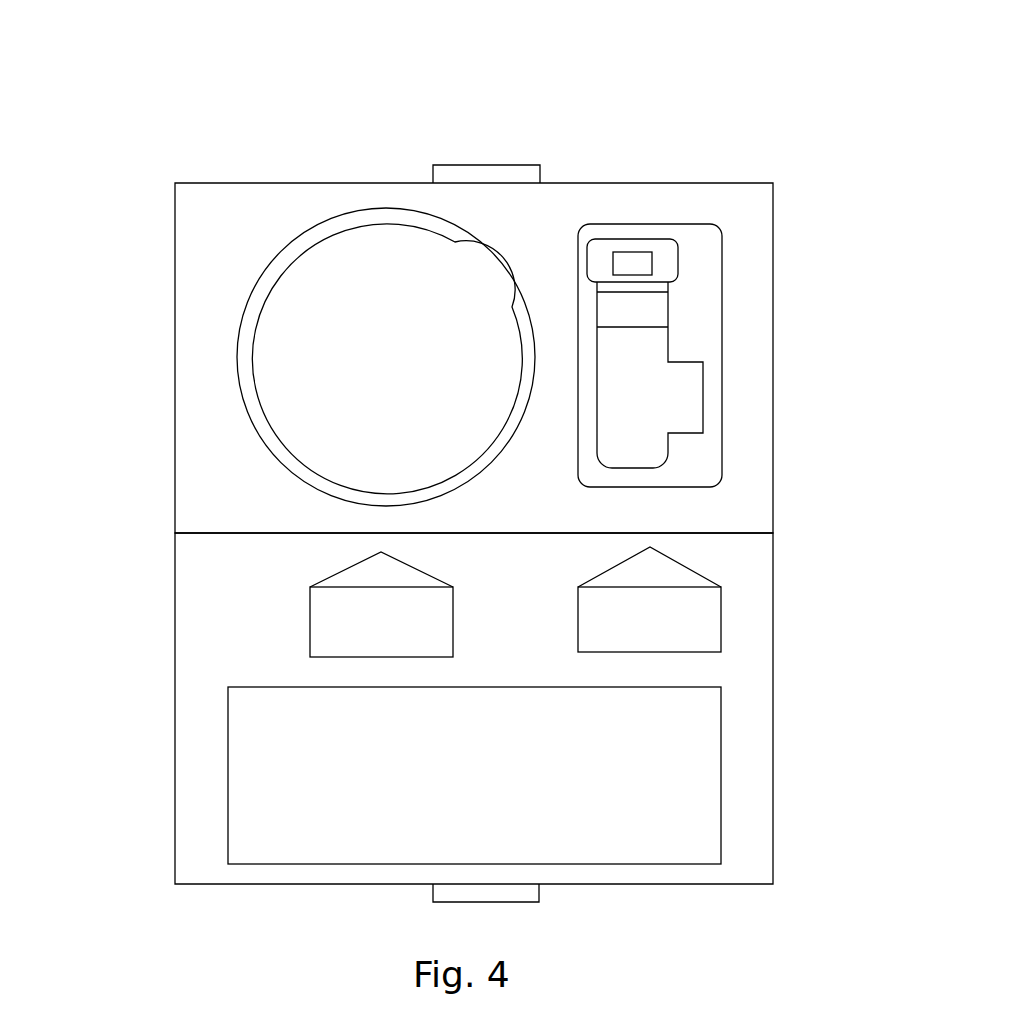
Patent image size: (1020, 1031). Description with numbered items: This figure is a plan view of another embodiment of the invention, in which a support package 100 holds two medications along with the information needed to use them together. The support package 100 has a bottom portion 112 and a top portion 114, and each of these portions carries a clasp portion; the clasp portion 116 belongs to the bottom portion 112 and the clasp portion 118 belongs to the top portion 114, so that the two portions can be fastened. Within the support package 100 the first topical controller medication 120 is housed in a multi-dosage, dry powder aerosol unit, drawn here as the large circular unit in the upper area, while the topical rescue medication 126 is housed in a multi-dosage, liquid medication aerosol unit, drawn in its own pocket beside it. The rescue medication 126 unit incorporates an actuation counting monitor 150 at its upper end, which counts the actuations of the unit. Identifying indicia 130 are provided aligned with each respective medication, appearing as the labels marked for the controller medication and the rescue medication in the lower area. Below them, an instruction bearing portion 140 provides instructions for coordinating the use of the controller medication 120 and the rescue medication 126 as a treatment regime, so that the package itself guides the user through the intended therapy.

The support package 100 is at (198, 123).
The bottom portion 112 is at (175, 572).
The top portion 114 is at (175, 413).
The clasp portion 116 is at (452, 902).
The clasp portion 118 is at (502, 165).
The first topical controller medication 120 is at (333, 232).
The topical rescue medication 126 is at (668, 347).
The identifying indicia 130 is at (280, 618).
The instruction bearing portion 140 is at (228, 770).
The actuation counting monitor 150 is at (648, 239).